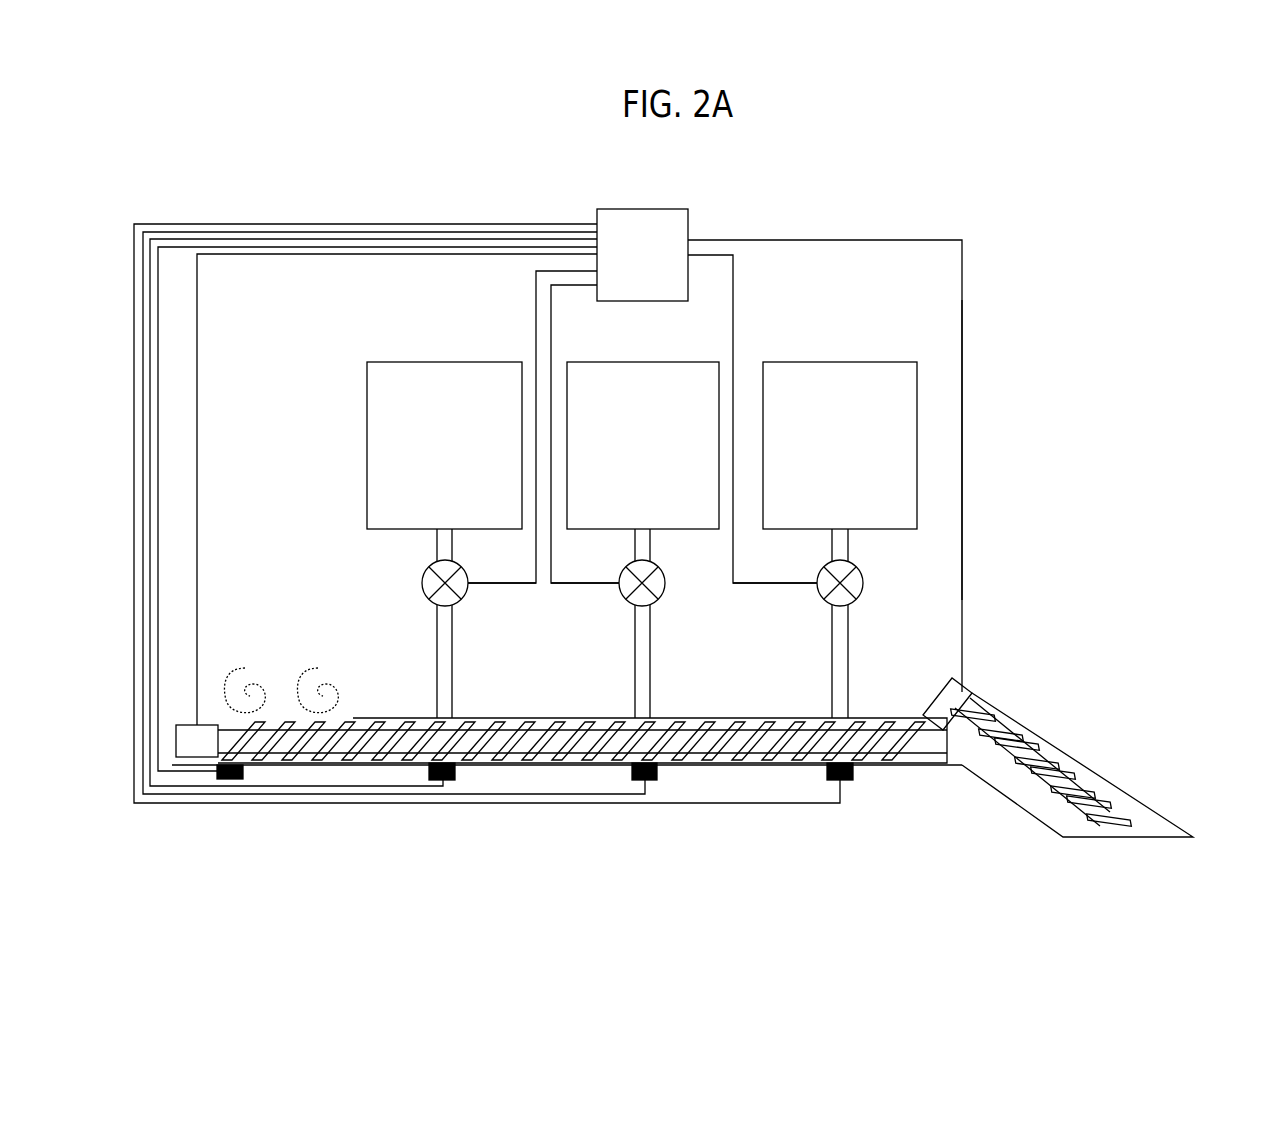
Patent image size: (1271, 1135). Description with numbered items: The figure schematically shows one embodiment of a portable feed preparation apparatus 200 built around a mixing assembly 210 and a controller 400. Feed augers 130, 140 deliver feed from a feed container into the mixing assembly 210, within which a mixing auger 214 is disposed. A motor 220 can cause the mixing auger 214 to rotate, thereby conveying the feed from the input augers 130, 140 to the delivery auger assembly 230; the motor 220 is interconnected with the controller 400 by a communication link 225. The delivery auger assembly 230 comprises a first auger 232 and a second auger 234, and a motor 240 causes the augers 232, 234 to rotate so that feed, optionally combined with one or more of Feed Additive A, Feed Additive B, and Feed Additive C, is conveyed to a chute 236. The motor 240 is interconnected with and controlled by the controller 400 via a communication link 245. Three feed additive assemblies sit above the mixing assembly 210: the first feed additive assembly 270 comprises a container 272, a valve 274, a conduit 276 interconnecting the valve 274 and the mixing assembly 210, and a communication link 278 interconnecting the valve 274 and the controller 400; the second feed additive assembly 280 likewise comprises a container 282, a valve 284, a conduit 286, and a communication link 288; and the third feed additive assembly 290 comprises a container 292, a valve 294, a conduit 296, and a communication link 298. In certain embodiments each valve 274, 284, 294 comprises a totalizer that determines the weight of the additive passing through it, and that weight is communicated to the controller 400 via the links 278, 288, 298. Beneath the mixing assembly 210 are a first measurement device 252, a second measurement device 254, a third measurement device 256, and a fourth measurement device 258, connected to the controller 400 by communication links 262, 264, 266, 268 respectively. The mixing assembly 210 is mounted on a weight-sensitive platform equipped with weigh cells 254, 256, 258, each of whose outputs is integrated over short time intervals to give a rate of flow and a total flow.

The portable feed preparation apparatus 200 is at (918, 172).
The controller 400 is at (642, 396).
The mixing assembly 210 is at (582, 806).
The mixing auger 214 is at (545, 763).
The motor 220 is at (197, 742).
The communication link 225 is at (198, 527).
The feed auger 130 is at (243, 663).
The feed auger 140 is at (320, 663).
The delivery auger assembly 230 is at (1081, 809).
The first auger 232 is at (1083, 823).
The second auger 234 is at (1117, 803).
The chute 236 is at (1085, 760).
The motor 240 is at (948, 702).
The communication link 245 is at (963, 421).
The first measurement device 252 is at (230, 779).
The second measurement device 254 is at (450, 780).
The third measurement device 256 is at (645, 780).
The fourth measurement device 258 is at (840, 780).
The communication link 262 is at (158, 483).
The communication link 264 is at (150, 422).
The communication link 266 is at (143, 362).
The communication link 268 is at (134, 303).
The first feed additive assembly 270 is at (454, 490).
The container 272 is at (444, 445).
The valve 274 is at (422, 583).
The conduit 276 is at (453, 683).
The communication link 278 is at (505, 585).
The second feed additive assembly 280 is at (646, 498).
The container 282 is at (643, 445).
The valve 284 is at (663, 578).
The conduit 286 is at (650, 683).
The communication link 288 is at (580, 585).
The third feed additive assembly 290 is at (833, 489).
The container 292 is at (840, 445).
The valve 294 is at (862, 578).
The conduit 296 is at (848, 662).
The communication link 298 is at (770, 585).